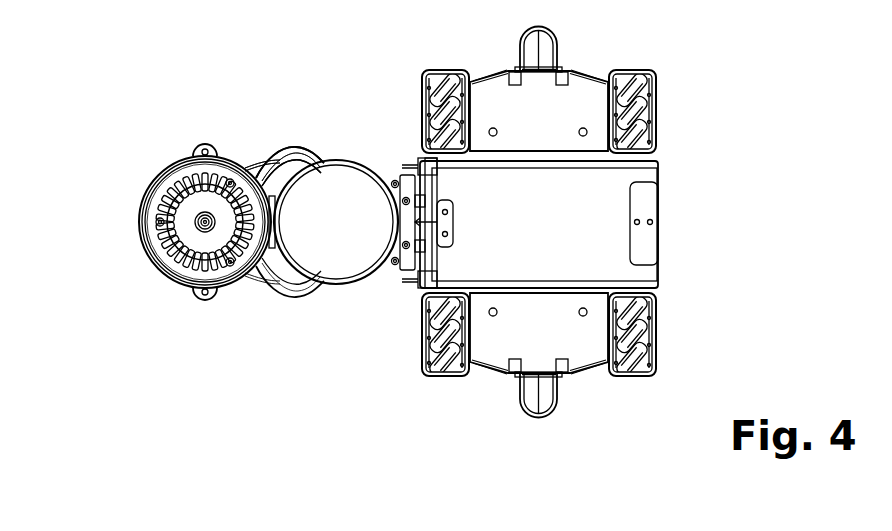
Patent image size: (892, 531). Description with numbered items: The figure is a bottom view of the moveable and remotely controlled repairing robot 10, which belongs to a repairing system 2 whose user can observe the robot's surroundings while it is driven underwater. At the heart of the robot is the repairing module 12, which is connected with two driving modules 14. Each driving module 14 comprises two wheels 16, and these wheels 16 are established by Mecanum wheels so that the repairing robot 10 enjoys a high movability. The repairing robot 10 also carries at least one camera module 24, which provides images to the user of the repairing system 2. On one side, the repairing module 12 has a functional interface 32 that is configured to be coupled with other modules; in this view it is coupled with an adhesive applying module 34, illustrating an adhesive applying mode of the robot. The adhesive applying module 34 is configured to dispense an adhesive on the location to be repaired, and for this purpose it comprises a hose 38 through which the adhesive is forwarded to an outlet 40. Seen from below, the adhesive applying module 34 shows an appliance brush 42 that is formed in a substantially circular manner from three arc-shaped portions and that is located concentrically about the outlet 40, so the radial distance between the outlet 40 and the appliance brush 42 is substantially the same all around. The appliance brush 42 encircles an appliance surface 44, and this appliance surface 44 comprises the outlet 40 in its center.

The repairing system 2 is at (344, 126).
The repairing robot 10 is at (262, 108).
The repairing module 12 is at (608, 243).
The driving module 14 is at (585, 93).
The wheel 16 is at (657, 122).
The camera module 24 is at (506, 59).
The functional interface 32 is at (406, 156).
The adhesive applying module 34 is at (193, 193).
The hose 38 is at (272, 298).
The outlet 40 is at (191, 209).
The appliance brush 42 is at (152, 176).
The appliance surface 44 is at (191, 240).